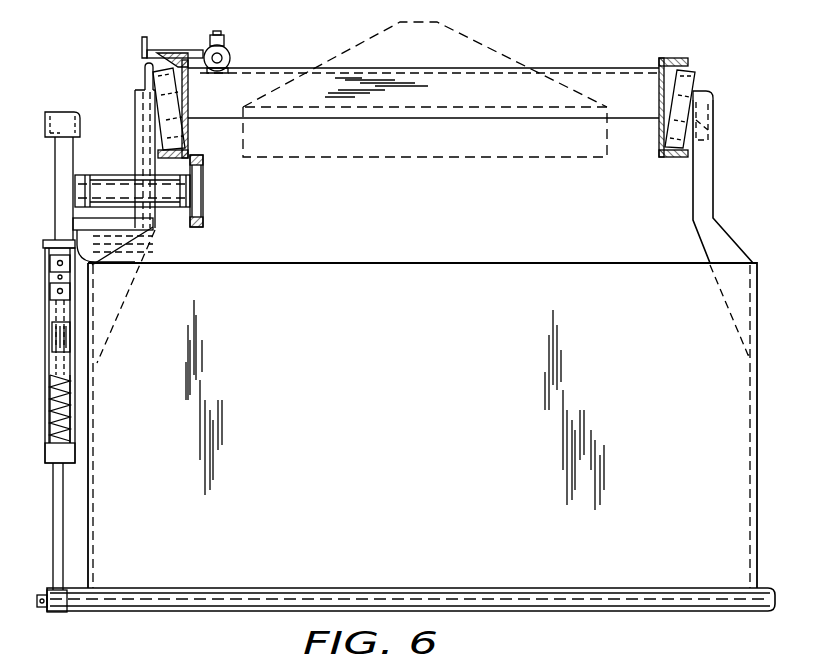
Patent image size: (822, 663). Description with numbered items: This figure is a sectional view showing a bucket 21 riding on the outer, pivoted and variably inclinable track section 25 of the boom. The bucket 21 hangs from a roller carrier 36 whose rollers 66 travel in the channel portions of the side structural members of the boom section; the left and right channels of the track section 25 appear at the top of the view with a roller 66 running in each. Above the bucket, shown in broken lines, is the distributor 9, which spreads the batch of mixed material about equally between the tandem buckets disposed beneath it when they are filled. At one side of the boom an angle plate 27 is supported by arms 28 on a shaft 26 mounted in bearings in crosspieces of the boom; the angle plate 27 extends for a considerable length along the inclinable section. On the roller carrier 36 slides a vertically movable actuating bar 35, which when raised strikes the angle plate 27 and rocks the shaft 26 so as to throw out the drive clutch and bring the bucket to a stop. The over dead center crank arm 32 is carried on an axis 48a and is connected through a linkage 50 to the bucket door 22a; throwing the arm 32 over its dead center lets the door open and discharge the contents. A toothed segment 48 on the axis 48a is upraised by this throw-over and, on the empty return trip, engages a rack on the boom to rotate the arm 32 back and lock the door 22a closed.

The distributor 9 is at (470, 53).
The bucket 21 is at (417, 277).
The door 22a is at (552, 602).
The track section 25 is at (188, 105).
The shaft 26 is at (227, 55).
The angle plate 27 is at (140, 50).
The arms 28 is at (182, 50).
The over dead center crank arm 32 is at (72, 157).
The actuating bar 35 is at (145, 80).
The roller carrier 36 is at (153, 252).
The toothed segment 48 is at (203, 217).
The axis 48a is at (168, 190).
The linkage 50 is at (63, 477).
The rollers 66 is at (183, 145).